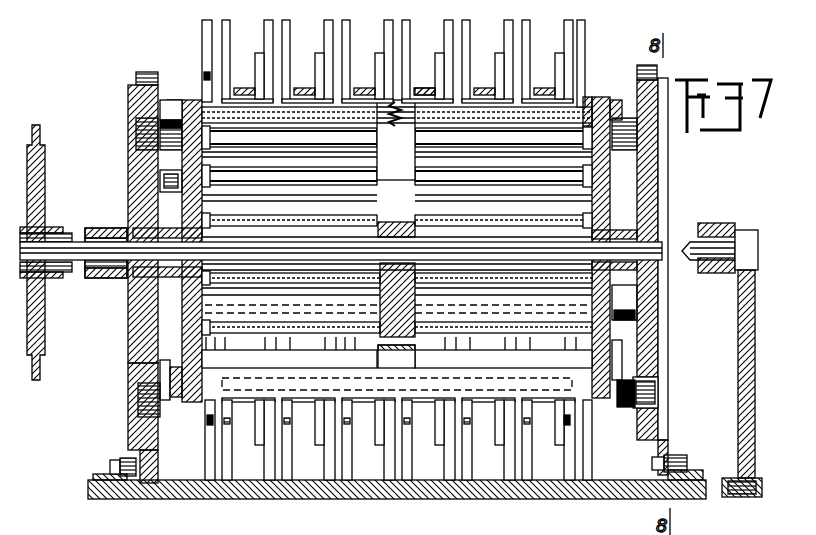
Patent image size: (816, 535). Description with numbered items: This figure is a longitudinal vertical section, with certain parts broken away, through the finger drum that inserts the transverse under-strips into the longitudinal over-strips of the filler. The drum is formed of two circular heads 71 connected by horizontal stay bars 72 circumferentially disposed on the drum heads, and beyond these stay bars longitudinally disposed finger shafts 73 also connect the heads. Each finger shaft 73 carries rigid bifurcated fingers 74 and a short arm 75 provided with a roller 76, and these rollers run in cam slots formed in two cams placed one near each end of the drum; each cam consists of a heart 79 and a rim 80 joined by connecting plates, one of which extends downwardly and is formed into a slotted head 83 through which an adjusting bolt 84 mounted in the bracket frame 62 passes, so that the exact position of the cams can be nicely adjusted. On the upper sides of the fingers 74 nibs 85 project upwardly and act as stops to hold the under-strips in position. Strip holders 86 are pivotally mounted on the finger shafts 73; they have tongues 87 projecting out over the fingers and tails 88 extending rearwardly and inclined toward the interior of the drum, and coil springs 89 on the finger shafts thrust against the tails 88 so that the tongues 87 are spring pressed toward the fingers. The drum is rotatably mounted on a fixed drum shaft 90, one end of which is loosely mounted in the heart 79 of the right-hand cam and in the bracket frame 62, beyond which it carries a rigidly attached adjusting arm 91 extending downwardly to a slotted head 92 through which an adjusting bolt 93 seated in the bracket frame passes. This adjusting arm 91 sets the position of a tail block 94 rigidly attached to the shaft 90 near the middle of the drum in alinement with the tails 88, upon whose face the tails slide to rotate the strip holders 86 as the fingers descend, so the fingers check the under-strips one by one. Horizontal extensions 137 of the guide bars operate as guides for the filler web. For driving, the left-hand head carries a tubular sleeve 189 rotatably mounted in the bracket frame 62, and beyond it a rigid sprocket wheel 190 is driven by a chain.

The bracket frame 62 is at (110, 278).
The circular head 71 is at (188, 100).
The stay bar 72 is at (488, 163).
The finger shaft 73 is at (533, 113).
The finger 74 is at (587, 60).
The short arm 75 is at (166, 170).
The roller 76 is at (132, 128).
The heart 79 is at (137, 192).
The rim 80 is at (147, 430).
The slotted head 83 is at (140, 453).
The adjusting bolt 84 is at (110, 465).
The nib 85 is at (564, 418).
The strip holder 86 is at (375, 393).
The tongue 87 is at (262, 60).
The tail 88 is at (425, 358).
The coil spring 89 is at (395, 127).
The drum shaft 90 is at (656, 242).
The adjusting arm 91 is at (755, 292).
The slotted head 92 is at (757, 477).
The adjusting bolt 93 is at (759, 497).
The tail block 94 is at (380, 294).
The horizontal extension 137 is at (422, 86).
The tubular sleeve 189 is at (81, 229).
The sprocket wheel 190 is at (45, 317).